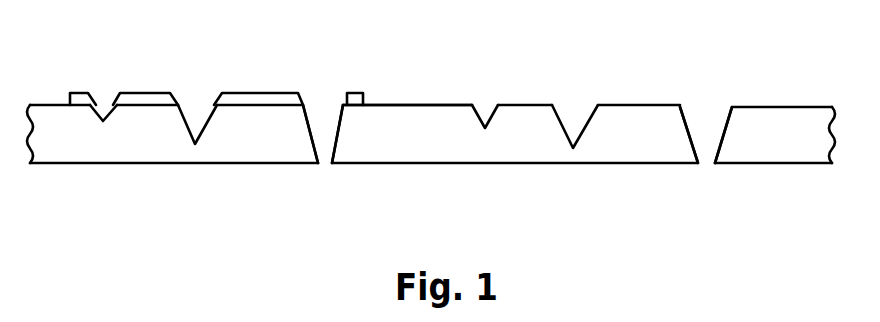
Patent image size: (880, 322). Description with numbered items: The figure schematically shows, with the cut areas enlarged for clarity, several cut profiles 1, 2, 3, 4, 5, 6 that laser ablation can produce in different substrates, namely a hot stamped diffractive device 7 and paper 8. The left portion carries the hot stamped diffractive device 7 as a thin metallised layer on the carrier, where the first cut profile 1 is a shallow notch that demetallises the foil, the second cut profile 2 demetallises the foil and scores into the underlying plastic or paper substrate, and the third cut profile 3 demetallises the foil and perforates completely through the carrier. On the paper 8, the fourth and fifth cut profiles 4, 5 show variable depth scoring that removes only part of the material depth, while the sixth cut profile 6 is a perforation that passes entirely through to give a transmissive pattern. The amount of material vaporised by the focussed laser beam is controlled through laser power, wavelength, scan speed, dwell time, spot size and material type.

The cut profile 1 is at (107, 102).
The cut profile 2 is at (198, 112).
The cut profile 3 is at (326, 166).
The cut profile 4 is at (485, 104).
The cut profile 5 is at (571, 104).
The cut profile 6 is at (708, 166).
The hot stamped diffractive device 7 is at (145, 92).
The paper 8 is at (415, 102).